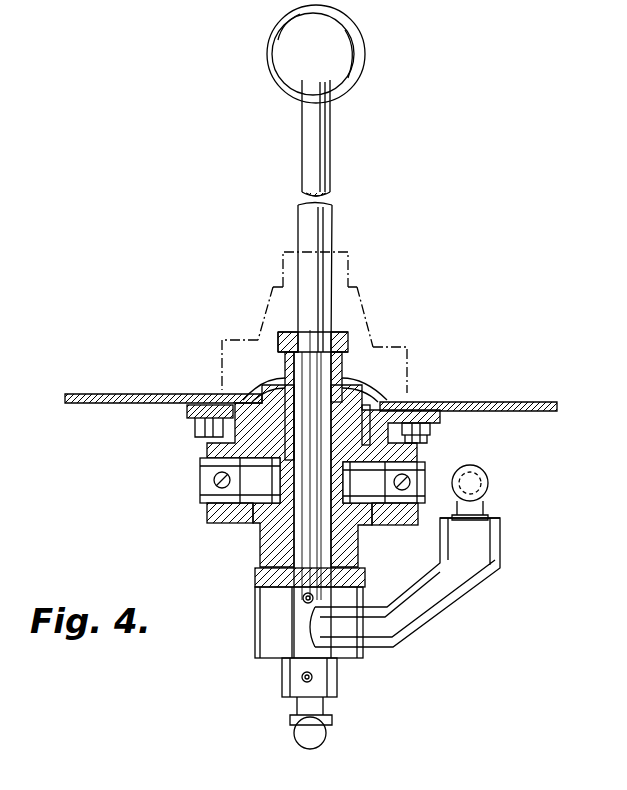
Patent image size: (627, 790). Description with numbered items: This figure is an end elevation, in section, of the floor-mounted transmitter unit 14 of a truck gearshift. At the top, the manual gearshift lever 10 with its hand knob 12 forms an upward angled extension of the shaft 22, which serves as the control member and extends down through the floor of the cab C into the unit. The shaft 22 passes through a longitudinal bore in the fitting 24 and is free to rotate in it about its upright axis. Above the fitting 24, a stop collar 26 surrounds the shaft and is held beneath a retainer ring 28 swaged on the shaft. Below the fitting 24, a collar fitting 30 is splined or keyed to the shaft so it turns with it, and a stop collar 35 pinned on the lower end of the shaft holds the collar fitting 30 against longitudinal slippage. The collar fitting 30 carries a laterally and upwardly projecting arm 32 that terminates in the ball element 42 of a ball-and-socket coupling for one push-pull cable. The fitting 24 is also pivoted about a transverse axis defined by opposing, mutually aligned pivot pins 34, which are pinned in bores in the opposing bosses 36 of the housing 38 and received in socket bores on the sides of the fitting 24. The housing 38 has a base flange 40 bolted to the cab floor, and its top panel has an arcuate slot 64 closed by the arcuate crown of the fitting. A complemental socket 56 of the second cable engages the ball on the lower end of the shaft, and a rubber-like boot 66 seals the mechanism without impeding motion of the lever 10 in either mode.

The manual gearshift lever 10 is at (328, 170).
The hand knob 12 is at (360, 74).
The transmitter unit 14 is at (152, 503).
The shaft 22 is at (350, 350).
The fitting 24 is at (368, 393).
The stop collar 26 is at (286, 364).
The retainer ring 28 is at (280, 333).
The collar fitting 30 is at (258, 592).
The arm 32 is at (445, 598).
The pivot pins 34 is at (200, 462).
The stop collar 35 is at (337, 680).
The bosses 36 is at (212, 515).
The housing 38 is at (232, 442).
The base flange 40 is at (436, 418).
The ball element 42 is at (490, 483).
The socket 56 is at (325, 738).
The arcuate slot 64 is at (355, 372).
The boot 66 is at (377, 290).
The cab C is at (510, 392).